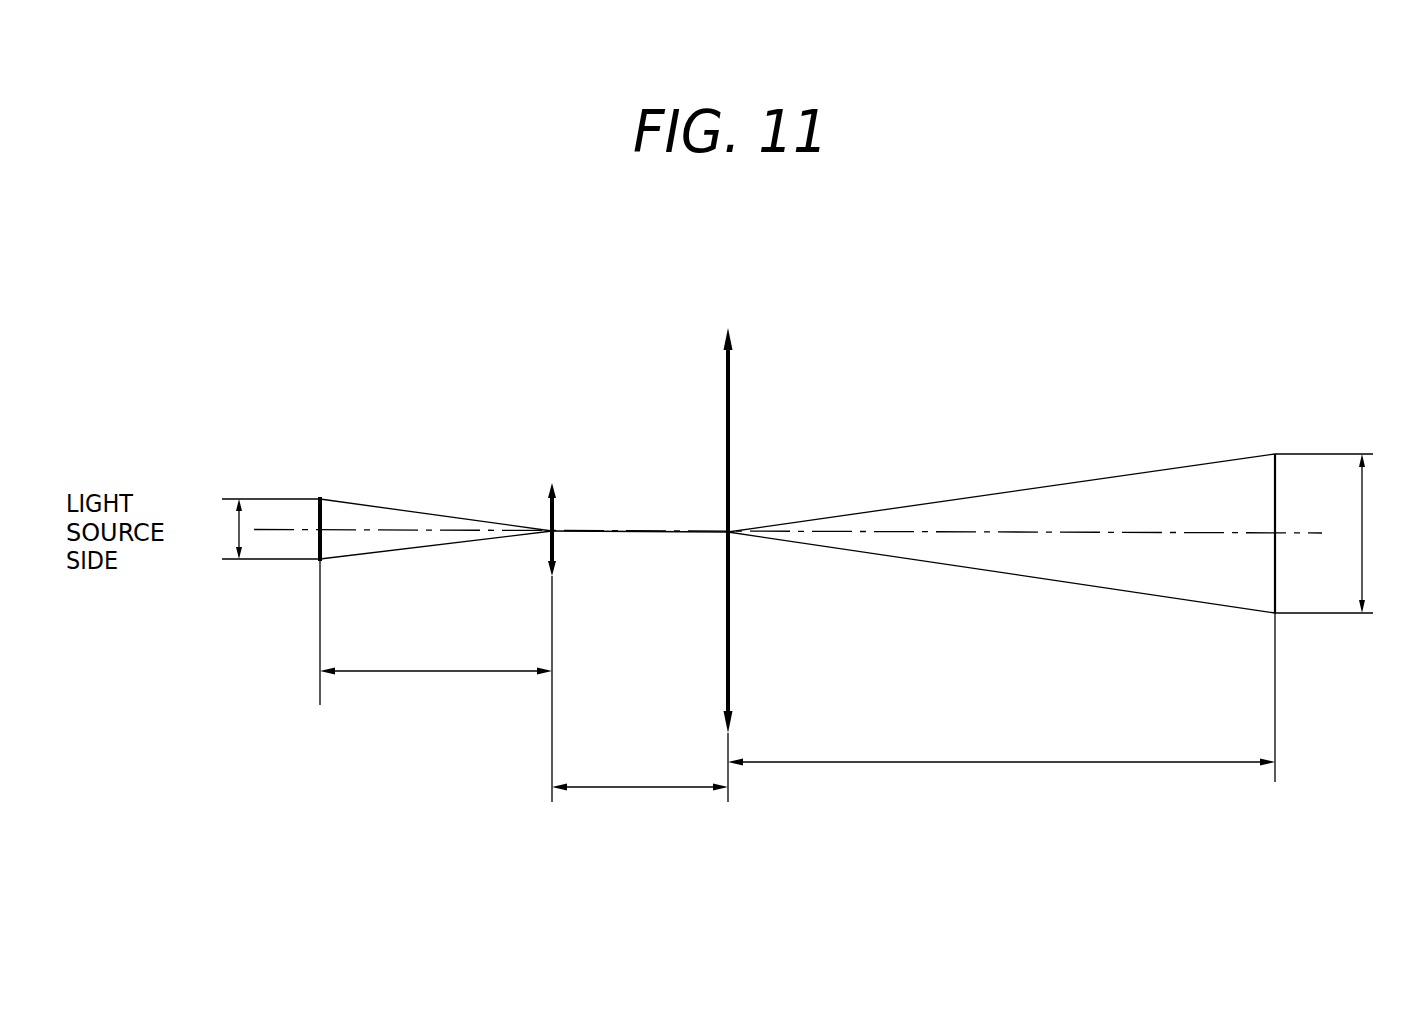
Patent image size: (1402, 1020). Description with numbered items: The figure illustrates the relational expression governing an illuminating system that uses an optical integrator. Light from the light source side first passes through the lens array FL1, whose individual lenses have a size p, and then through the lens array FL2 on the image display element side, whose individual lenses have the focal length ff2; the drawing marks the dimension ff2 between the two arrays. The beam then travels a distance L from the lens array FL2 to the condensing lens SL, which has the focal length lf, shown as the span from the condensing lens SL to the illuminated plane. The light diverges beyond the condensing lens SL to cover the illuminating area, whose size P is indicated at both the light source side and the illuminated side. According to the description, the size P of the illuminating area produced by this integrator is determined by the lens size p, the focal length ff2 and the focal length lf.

The lens array on the light source side FL1 is at (318, 488).
The lens array on the image display element side FL2 is at (553, 480).
The condensing lens SL is at (730, 325).
The size of the illuminating area P is at (796, 533).
The focal length of the individual lenses of lens array FL2 ff2 is at (436, 655).
The distance between lens FL2 and lens SL L is at (640, 772).
The focal length of the condensing lens lf is at (1001, 745).